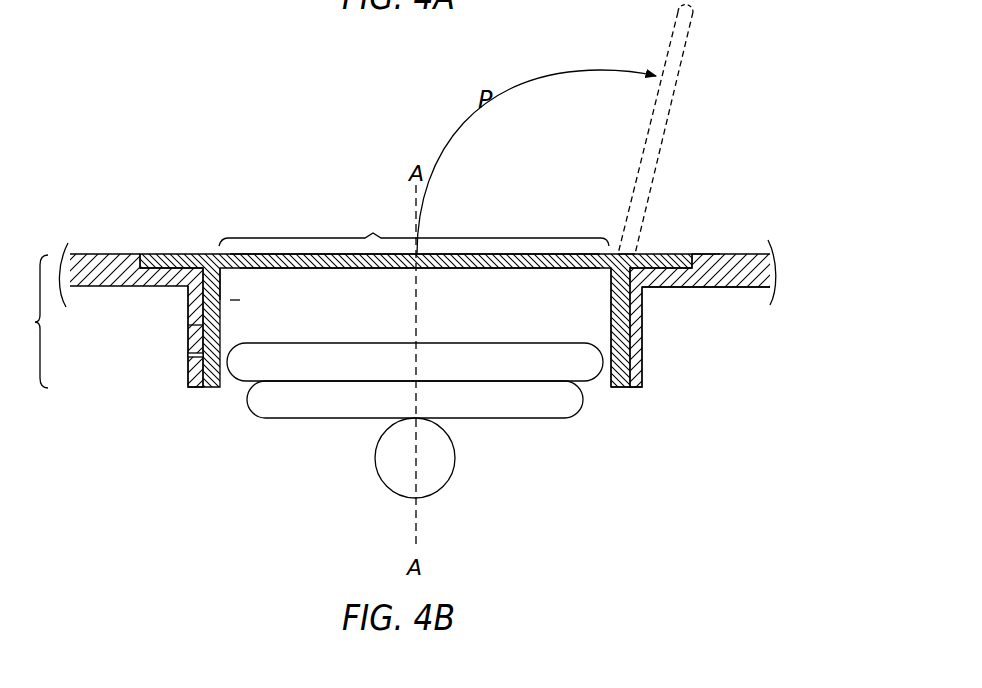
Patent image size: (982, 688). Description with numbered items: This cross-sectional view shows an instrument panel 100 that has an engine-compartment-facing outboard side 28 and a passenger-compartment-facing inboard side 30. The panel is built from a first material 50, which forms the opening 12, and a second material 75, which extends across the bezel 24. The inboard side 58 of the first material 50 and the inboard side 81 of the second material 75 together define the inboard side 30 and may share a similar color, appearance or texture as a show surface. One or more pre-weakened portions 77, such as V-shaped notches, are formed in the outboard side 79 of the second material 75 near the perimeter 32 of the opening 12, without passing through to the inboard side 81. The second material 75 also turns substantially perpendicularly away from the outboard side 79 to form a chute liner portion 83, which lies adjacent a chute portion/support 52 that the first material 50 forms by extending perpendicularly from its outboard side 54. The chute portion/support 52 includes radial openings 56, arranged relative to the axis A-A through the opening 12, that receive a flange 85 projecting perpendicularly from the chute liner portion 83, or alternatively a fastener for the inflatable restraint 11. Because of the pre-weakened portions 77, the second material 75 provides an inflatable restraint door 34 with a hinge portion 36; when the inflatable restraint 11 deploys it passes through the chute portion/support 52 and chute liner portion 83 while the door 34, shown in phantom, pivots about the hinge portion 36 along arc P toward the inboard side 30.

The inboard side 30 is at (143, 127).
The inboard side of the first material 58 is at (90, 254).
The bezel 24 is at (150, 254).
The inboard side of the second material 81 is at (288, 254).
The inflatable restraint door 34 is at (693, 128).
The hinge portion 36 is at (628, 251).
The second material 75 is at (668, 254).
The first material 50 is at (725, 254).
The outboard side of the first material 54 is at (708, 287).
The perimeter of the opening 32 is at (611, 305).
The chute portion/support 52 is at (642, 352).
The chute liner portion 83 is at (620, 387).
The pre-weakened portion 77 is at (225, 260).
The outboard side of the second material 79 is at (315, 268).
The opening 12 is at (458, 320).
The inflatable restraint 11 is at (318, 448).
The outboard side 28 is at (480, 503).
The instrument panel 100 is at (24, 321).
The flange 85 is at (190, 340).
The radial opening 56 is at (190, 372).